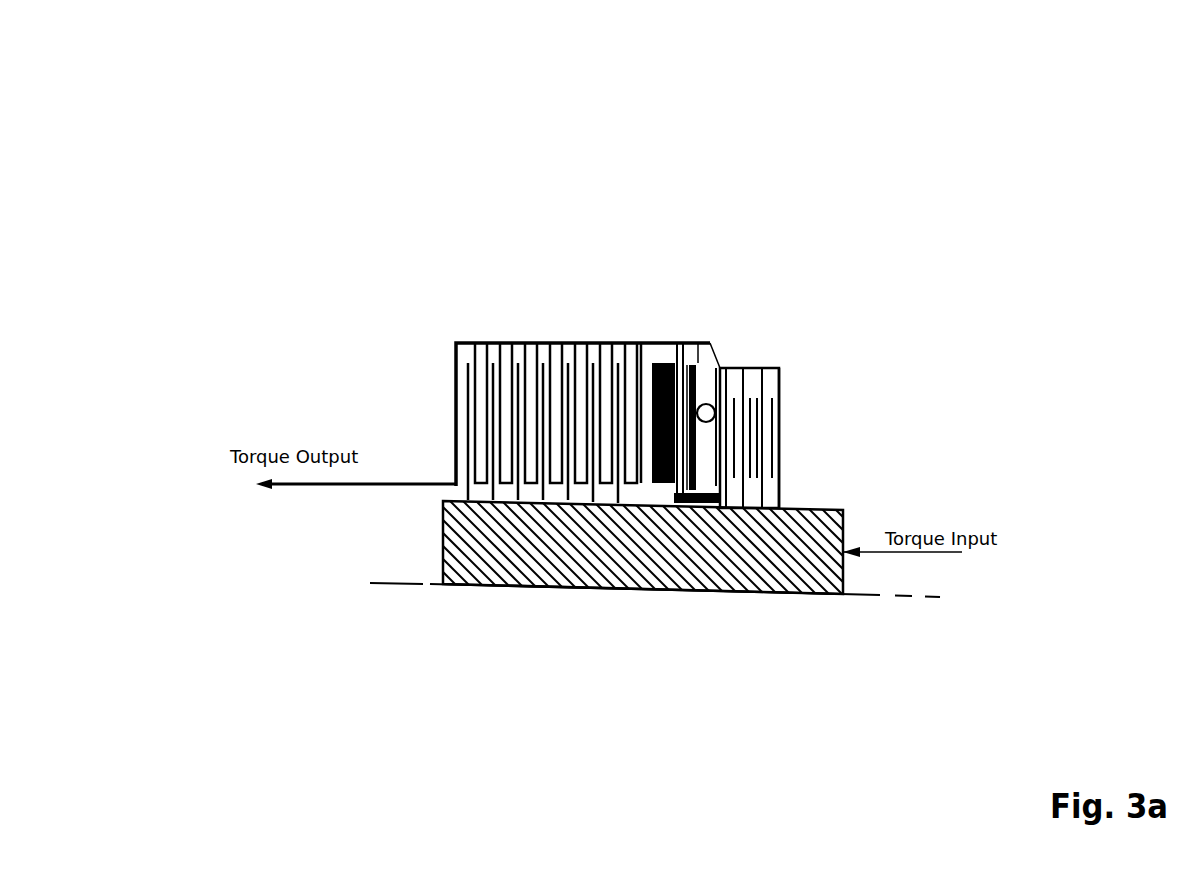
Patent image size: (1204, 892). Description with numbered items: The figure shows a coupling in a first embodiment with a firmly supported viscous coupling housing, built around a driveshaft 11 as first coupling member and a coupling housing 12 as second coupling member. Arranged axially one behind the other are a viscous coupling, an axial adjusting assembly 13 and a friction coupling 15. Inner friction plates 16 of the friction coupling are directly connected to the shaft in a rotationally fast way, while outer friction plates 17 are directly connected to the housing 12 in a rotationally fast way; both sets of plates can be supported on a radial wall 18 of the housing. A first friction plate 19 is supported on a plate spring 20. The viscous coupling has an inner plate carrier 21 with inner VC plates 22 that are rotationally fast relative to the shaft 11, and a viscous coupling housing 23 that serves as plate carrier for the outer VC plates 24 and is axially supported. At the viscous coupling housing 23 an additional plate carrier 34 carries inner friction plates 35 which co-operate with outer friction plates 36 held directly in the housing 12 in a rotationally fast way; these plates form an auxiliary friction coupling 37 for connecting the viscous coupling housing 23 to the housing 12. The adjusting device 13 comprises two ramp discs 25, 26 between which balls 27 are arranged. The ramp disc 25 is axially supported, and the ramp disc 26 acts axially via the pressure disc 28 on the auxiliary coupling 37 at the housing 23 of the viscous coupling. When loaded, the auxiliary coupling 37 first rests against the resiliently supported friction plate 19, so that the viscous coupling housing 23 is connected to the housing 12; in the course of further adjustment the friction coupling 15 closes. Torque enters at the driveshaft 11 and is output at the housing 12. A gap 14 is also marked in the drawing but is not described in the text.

The driveshaft 11 is at (820, 565).
The coupling housing 12 is at (505, 365).
The axial adjusting assembly 13 is at (735, 233).
The gap 14 is at (835, 108).
The friction coupling 15 is at (554, 265).
The inner friction plates 16 is at (550, 500).
The outer friction plates 17 is at (590, 370).
The radial wall 18 is at (453, 418).
The first friction plate 19 is at (641, 415).
The plate spring 20 is at (672, 363).
The inner plate carrier 21 is at (733, 510).
The inner VC plates 22 is at (775, 512).
The viscous coupling housing 23 is at (777, 372).
The outer VC plates 24 is at (748, 398).
The ramp disc 25 is at (768, 370).
The ramp disc 26 is at (710, 400).
The balls 27 is at (730, 372).
The pressure disc 28 is at (722, 488).
The additional plate carrier 34 is at (706, 505).
The inner friction plates 35 is at (692, 500).
The outer friction plates 36 is at (686, 368).
The auxiliary friction coupling 37 is at (698, 222).